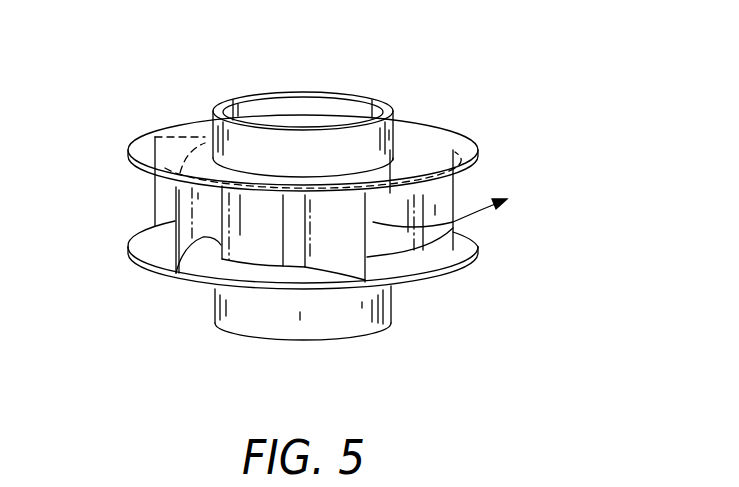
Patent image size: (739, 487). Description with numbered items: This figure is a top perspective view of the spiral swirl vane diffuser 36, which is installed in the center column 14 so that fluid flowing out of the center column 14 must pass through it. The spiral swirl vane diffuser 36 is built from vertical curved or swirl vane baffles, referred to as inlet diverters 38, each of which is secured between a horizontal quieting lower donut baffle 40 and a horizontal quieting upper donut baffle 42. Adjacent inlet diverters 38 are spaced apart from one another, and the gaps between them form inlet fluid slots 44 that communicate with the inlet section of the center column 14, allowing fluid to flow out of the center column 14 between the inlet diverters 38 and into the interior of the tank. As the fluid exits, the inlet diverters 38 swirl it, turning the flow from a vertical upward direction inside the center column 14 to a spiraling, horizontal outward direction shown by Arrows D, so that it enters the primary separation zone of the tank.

The spiral swirl vane diffuser 36 is at (510, 85).
The horizontal quieting upper donut baffle 42 is at (143, 148).
The horizontal quieting lower donut baffle 40 is at (142, 245).
The inlet fluid slots 44 is at (255, 178).
The inlet diverters 38 is at (220, 236).
The center column 14 is at (392, 310).
The Arrows D is at (477, 217).